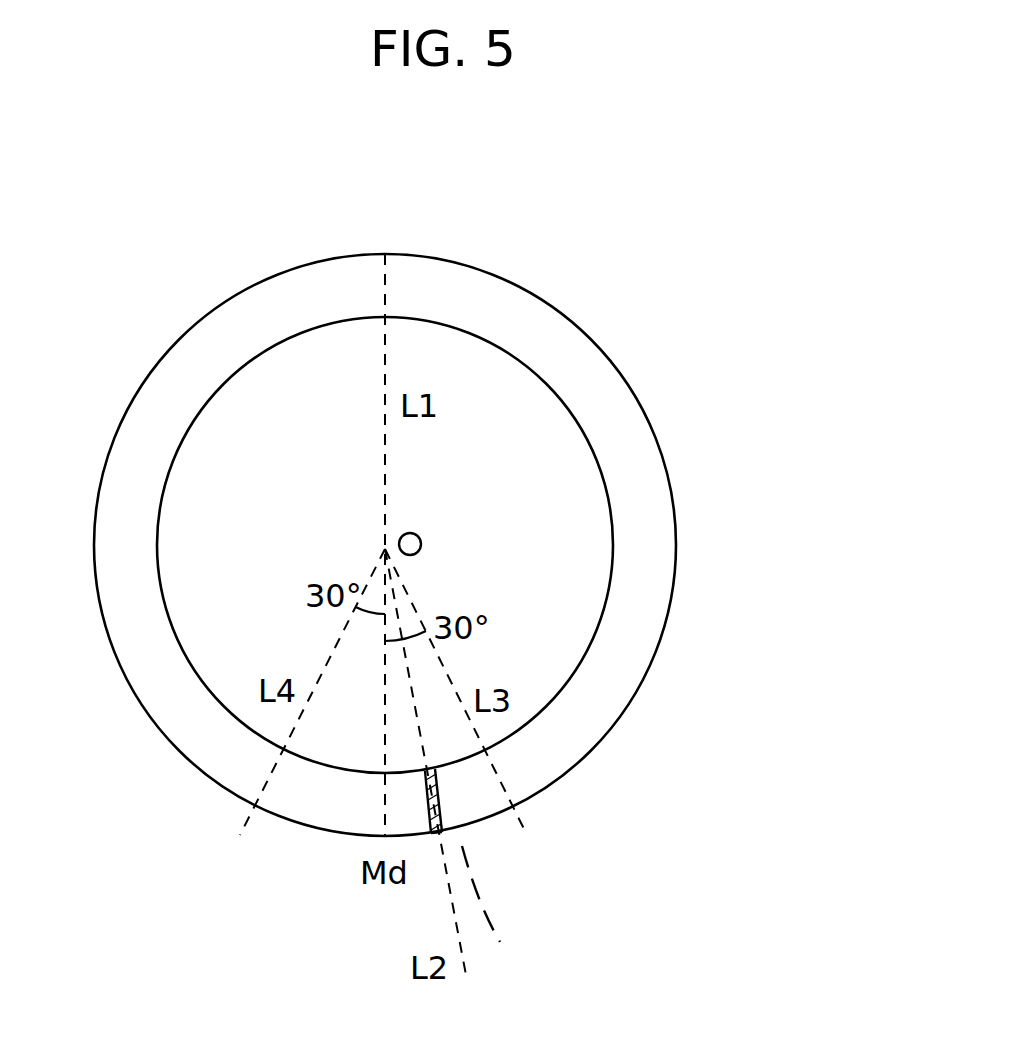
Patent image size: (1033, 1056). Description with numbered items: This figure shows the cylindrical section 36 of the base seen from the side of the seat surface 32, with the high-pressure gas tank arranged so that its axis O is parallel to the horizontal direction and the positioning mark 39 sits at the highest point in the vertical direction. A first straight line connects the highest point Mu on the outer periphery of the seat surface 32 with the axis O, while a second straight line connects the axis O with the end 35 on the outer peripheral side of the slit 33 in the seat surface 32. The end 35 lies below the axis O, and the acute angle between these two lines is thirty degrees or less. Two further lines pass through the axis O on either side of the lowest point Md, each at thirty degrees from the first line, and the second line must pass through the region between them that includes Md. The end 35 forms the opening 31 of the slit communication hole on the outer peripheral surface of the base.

The positioning mark 39 is at (389, 208).
The cylindrical section 36 is at (593, 342).
The seat surface 32 is at (633, 490).
The slit 33 is at (438, 793).
The end 35 is at (452, 842).
The opening 31 is at (504, 912).